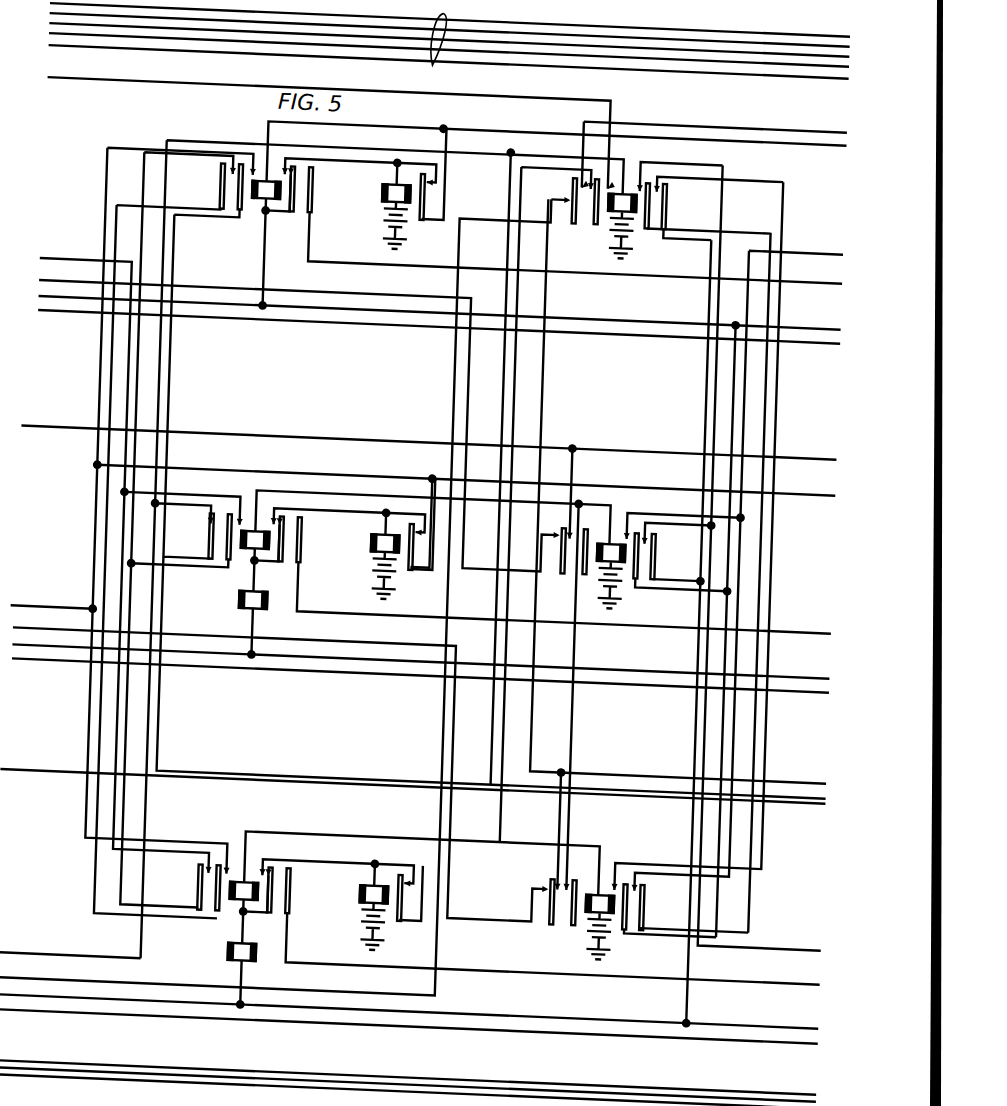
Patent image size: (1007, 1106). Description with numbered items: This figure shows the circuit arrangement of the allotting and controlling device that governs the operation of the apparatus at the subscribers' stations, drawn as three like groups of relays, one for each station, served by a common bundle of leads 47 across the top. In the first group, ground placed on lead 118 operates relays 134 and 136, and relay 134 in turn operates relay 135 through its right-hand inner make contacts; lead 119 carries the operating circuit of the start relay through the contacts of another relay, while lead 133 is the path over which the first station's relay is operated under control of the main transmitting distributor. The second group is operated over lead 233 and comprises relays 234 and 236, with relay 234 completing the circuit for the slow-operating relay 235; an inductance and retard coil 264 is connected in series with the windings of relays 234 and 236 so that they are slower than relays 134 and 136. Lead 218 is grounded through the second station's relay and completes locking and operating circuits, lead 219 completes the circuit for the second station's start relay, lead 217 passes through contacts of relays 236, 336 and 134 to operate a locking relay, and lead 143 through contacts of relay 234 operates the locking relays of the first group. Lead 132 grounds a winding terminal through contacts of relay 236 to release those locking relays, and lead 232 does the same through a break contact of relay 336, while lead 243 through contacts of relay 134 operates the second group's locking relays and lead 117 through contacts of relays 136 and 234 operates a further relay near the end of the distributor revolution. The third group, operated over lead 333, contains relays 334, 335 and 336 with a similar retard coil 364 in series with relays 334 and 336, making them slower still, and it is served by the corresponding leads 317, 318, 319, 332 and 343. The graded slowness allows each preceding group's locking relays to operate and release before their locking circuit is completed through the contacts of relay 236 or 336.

The leads 47 is at (437, 49).
The lead 117 is at (56, 75).
The lead 118 is at (54, 294).
The lead 119 is at (54, 308).
The lead 132 is at (54, 278).
The lead 133 is at (118, 1073).
The relay 134 is at (264, 190).
The relay 135 is at (386, 177).
The relay 136 is at (644, 190).
The lead 143 is at (54, 256).
The lead 217 is at (42, 424).
The lead 218 is at (40, 643).
The lead 219 is at (40, 657).
The lead 232 is at (40, 626).
The lead 233 is at (70, 1066).
The relay 234 is at (270, 548).
The relay 235 is at (388, 531).
The relay 236 is at (655, 545).
The lead 243 is at (40, 604).
The inductance and retard coil 264 is at (268, 596).
The row conductor 317 is at (32, 768).
The supply conductor 318 is at (25, 993).
The ground conductor 319 is at (25, 1008).
The write conductor 332 is at (25, 976).
The lead 333 is at (20, 1059).
The relay 334 is at (268, 896).
The storage transistor with capacitor 335 is at (388, 876).
The relay 336 is at (644, 896).
The select conductor 343 is at (26, 951).
The retard coil 364 is at (268, 951).